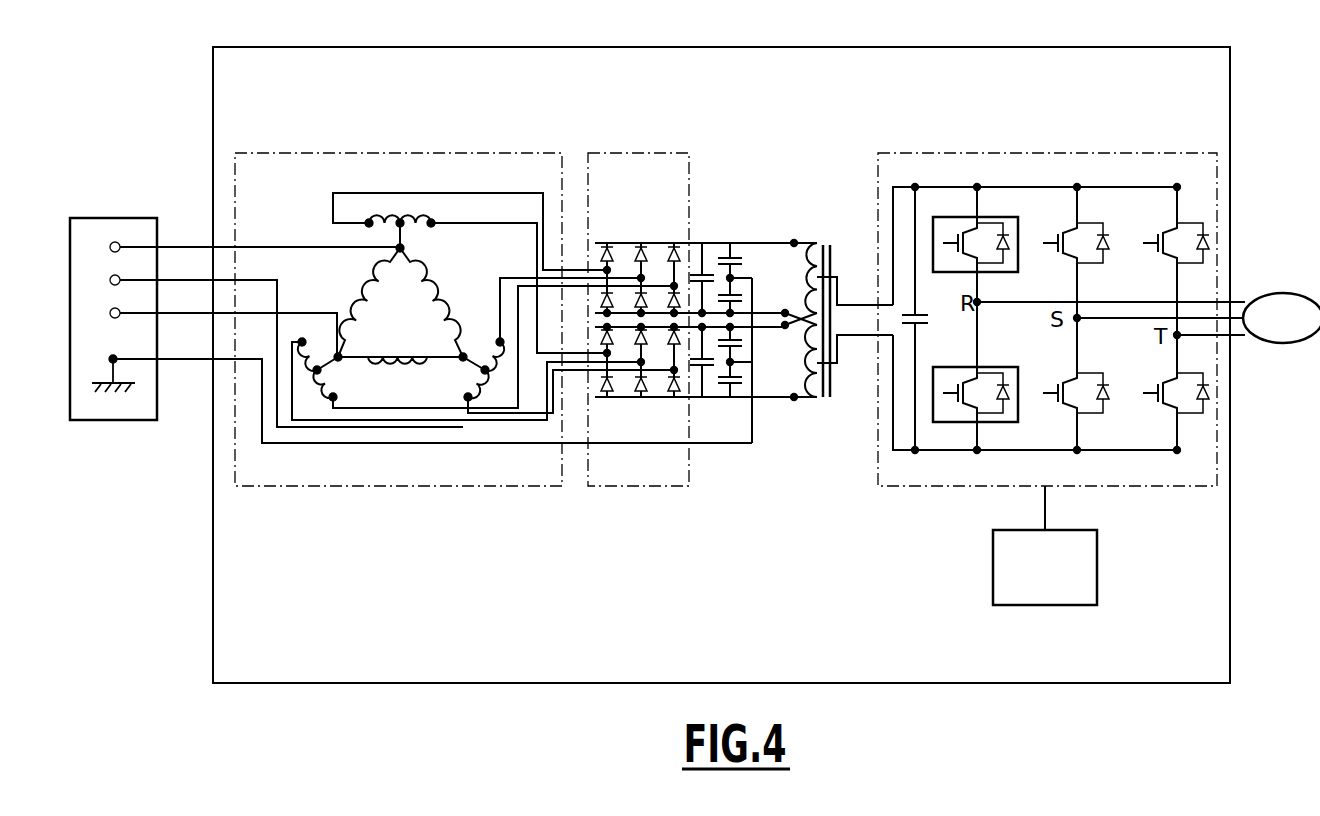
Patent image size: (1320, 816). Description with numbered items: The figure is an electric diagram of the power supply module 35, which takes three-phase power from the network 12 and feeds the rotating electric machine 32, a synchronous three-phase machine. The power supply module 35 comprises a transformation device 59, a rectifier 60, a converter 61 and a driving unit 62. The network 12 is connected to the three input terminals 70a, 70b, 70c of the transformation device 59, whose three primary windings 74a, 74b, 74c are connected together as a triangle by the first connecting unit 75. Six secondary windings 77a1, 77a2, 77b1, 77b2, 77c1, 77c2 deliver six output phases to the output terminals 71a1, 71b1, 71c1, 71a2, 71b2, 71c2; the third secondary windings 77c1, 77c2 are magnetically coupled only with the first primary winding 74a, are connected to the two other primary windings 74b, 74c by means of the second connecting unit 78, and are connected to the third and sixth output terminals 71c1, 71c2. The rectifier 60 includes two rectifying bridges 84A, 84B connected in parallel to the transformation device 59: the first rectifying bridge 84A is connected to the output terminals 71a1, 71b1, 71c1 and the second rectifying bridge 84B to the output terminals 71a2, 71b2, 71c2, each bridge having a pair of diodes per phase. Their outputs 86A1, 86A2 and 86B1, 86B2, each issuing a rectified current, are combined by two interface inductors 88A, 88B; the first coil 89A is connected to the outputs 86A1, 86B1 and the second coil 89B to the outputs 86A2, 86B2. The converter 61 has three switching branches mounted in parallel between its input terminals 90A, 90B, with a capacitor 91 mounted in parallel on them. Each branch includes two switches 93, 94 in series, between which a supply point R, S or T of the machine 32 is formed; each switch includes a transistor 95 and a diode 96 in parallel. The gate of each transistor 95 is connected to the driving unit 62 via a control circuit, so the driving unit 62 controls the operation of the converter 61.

The power supply module 35 is at (1232, 78).
The network 12 is at (95, 218).
The input terminal 70a is at (178, 247).
The input terminal 70b is at (277, 283).
The input terminal 70c is at (160, 315).
The transformation device 59 is at (365, 153).
The first connecting unit 75 is at (411, 319).
The first primary winding 74a is at (452, 300).
The primary winding 74b is at (398, 363).
The primary winding 74c is at (353, 306).
The second connecting unit 78 is at (406, 236).
The secondary winding 77a1 is at (385, 220).
The secondary winding 77a2 is at (412, 220).
The secondary winding 77b1 is at (500, 360).
The secondary winding 77b2 is at (476, 379).
The third secondary winding 77c1 is at (323, 393).
The third secondary winding 77c2 is at (305, 358).
The rectifier 60 is at (680, 153).
The first rectifying bridge 84A is at (666, 236).
The second rectifying bridge 84B is at (669, 414).
The first output terminal 71a1 is at (565, 268).
The second output terminal 71b1 is at (571, 277).
The third output terminal 71c1 is at (580, 286).
The fourth output terminal 71a2 is at (575, 356).
The fifth output terminal 71b2 is at (570, 364).
The sixth output terminal 71c2 is at (578, 372).
The first output 86A1 is at (790, 242).
The first output 86A2 is at (783, 311).
The second output 86B1 is at (800, 399).
The second output 86B2 is at (785, 327).
The first coil 89A is at (815, 245).
The second coil 89B is at (835, 400).
The first interface inductor 88A is at (837, 250).
The second interface inductor 88B is at (845, 352).
The converter 61 is at (1100, 153).
The input terminal 90A is at (912, 185).
The input terminal 90B is at (915, 452).
The capacitor 91 is at (926, 324).
The transistor 95 is at (997, 198).
The switch 93 is at (997, 216).
The diode 96 is at (1010, 242).
The switch 94 is at (1000, 423).
The rotating electric machine 32 is at (1148, 318).
The driving unit 62 is at (1045, 545).